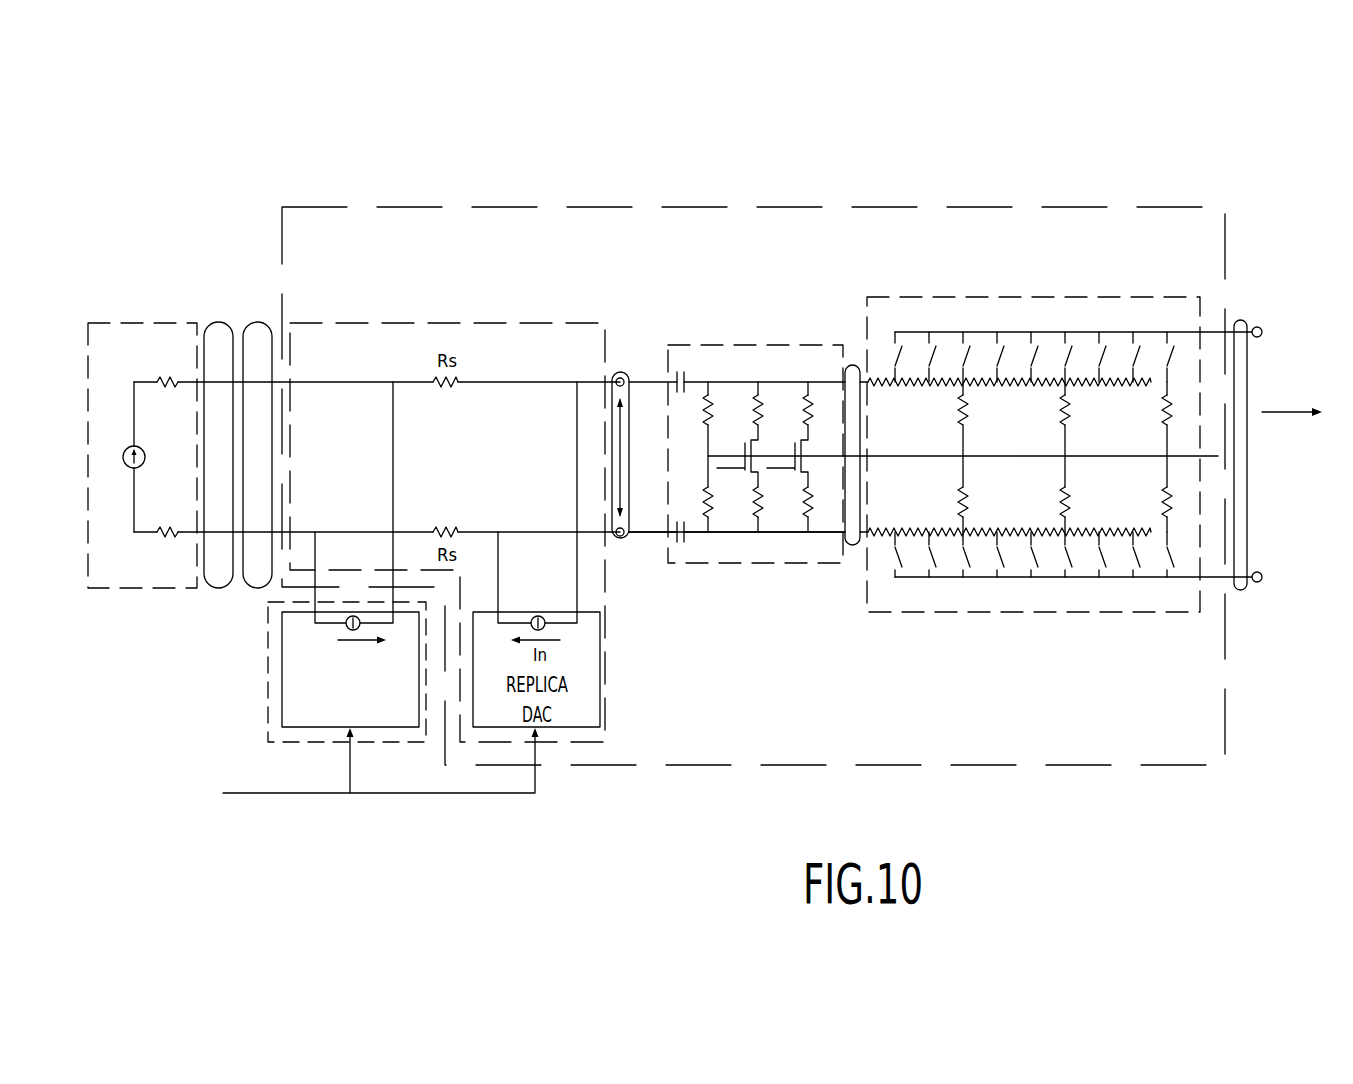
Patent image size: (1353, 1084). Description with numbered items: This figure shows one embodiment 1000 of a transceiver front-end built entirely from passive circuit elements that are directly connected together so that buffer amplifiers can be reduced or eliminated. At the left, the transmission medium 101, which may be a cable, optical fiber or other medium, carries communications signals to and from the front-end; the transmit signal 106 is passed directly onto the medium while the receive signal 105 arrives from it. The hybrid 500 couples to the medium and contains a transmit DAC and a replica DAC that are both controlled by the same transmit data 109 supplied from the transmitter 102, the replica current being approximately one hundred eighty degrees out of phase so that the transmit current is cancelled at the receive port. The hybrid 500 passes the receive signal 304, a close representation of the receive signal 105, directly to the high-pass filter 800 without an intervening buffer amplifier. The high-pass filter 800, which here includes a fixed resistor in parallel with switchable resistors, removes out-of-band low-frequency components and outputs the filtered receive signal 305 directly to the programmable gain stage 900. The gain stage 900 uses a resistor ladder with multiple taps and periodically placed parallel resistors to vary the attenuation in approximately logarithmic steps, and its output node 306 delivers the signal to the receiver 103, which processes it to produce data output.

The transceiver front-end embodiment 1000 is at (337, 207).
The hybrid circuit 500 is at (352, 323).
The high-pass filter 800 is at (718, 345).
The programmable gain stage 900 is at (895, 297).
The transmission medium 101 is at (142, 322).
The receive signal 105 is at (252, 322).
The transmit signal 106 is at (216, 590).
The transmitter 102 is at (268, 740).
The transmit data 109 is at (222, 810).
The receive signal 304 is at (625, 540).
The filtered receive signal 305 is at (852, 547).
The output node 306 is at (1238, 320).
The receiver 103 is at (1300, 464).